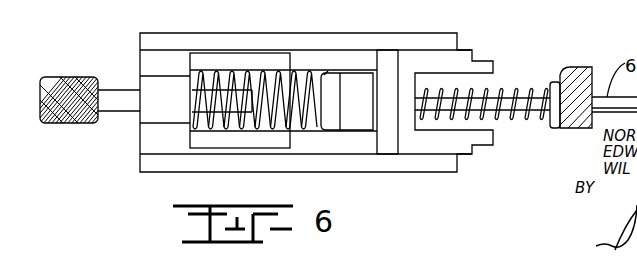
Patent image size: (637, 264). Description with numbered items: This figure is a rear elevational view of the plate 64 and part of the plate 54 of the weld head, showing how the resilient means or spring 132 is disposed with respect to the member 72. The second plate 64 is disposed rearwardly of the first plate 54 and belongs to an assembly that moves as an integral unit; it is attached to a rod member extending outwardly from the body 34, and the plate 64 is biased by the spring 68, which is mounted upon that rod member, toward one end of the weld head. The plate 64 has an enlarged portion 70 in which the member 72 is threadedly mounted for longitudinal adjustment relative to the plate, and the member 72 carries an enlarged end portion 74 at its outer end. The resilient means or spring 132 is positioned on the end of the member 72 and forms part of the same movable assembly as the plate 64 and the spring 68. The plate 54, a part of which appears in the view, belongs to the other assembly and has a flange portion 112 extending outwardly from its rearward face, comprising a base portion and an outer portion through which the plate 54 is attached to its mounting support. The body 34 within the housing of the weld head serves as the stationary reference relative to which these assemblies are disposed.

The body 34 is at (578, 68).
The plate 54 is at (326, 73).
The second plate 64 is at (290, 33).
The spring 68 is at (509, 90).
The enlarged portion 70 is at (150, 107).
The member 72 is at (121, 90).
The enlarged end portion 74 is at (72, 77).
The flange portion 112 is at (339, 131).
The resilient means or spring 132 is at (231, 72).